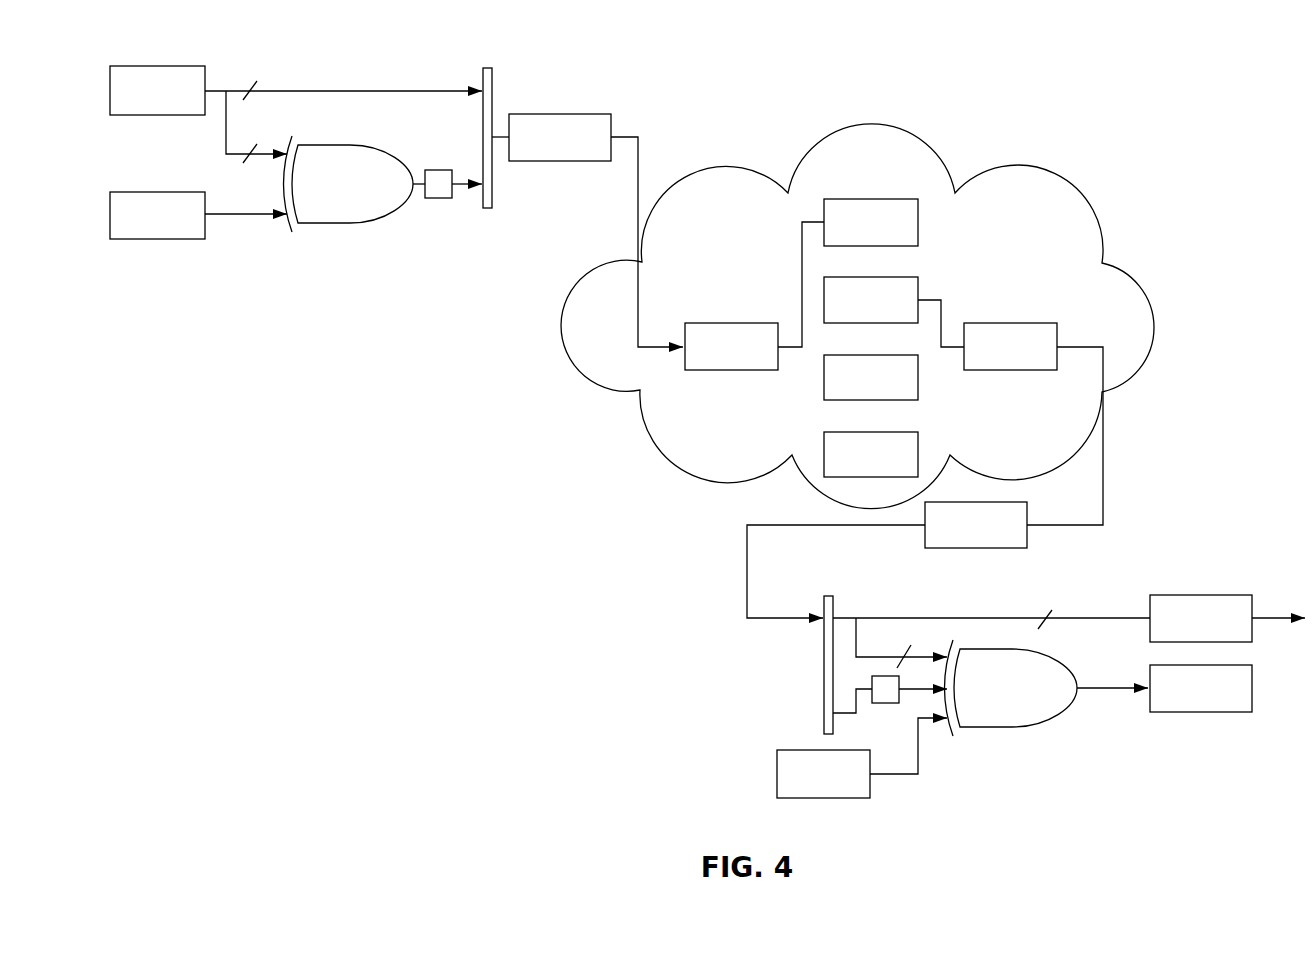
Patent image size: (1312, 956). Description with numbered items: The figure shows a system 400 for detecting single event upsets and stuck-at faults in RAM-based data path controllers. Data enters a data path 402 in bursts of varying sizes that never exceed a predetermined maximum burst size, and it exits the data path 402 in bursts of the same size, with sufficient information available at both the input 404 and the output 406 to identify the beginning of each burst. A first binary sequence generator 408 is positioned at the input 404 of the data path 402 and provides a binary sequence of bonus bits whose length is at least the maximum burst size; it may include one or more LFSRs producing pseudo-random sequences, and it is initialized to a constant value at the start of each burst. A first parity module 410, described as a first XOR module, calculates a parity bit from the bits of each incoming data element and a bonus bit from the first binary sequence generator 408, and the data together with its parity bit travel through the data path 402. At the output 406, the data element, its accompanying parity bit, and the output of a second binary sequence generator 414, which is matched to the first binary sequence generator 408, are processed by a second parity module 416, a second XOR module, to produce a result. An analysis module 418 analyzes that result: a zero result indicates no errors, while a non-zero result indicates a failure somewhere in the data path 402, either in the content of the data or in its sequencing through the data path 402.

The system 400 is at (515, 546).
The data path 402 is at (795, 158).
The input 404 is at (488, 67).
The output 406 is at (830, 595).
The first binary sequence generator 408 is at (157, 215).
The first parity module 410 is at (346, 225).
The second binary sequence generator 414 is at (823, 774).
The second parity module 416 is at (1006, 729).
The analysis module 418 is at (1203, 713).